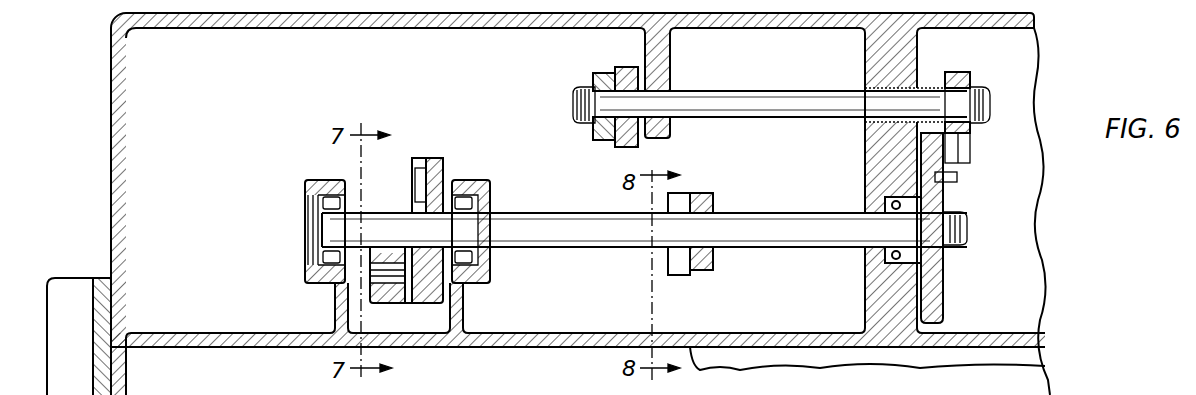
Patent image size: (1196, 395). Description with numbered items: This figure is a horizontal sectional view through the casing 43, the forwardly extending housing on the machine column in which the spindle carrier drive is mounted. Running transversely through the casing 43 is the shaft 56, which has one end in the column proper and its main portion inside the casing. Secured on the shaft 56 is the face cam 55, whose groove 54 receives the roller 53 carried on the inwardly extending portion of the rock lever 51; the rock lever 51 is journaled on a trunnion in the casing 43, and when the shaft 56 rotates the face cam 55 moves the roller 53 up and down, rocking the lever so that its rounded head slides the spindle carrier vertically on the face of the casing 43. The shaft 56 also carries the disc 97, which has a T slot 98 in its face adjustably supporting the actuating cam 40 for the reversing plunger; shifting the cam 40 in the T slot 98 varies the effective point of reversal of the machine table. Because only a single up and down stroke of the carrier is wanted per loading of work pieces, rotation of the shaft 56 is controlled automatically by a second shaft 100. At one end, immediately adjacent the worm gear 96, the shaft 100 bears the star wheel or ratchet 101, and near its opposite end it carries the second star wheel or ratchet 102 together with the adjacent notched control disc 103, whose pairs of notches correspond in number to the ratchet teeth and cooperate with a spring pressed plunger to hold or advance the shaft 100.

The casing 43 is at (111, 58).
The rock lever 51 is at (397, 296).
The roller 53 is at (426, 300).
The groove 54 is at (415, 185).
The face cam 55 is at (441, 160).
The shaft 56 is at (618, 247).
The actuating cam 40 is at (670, 272).
The T slot 98 is at (697, 193).
The disc 97 is at (714, 201).
The shaft 100 is at (830, 75).
The star wheel or ratchet 101 is at (985, 62).
The second star wheel or ratchet 102 is at (608, 141).
The notched control disc 103 is at (636, 148).
The worm gear 96 is at (940, 285).